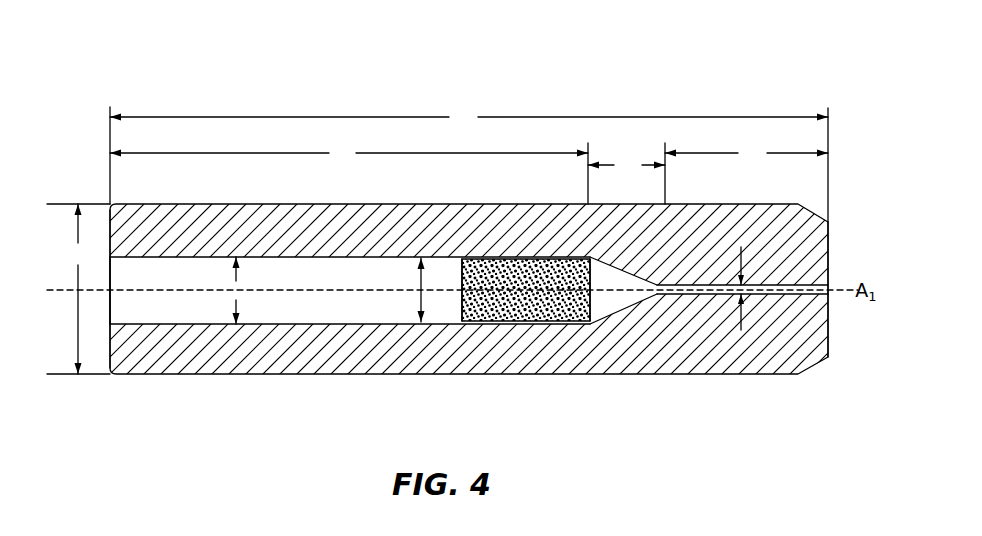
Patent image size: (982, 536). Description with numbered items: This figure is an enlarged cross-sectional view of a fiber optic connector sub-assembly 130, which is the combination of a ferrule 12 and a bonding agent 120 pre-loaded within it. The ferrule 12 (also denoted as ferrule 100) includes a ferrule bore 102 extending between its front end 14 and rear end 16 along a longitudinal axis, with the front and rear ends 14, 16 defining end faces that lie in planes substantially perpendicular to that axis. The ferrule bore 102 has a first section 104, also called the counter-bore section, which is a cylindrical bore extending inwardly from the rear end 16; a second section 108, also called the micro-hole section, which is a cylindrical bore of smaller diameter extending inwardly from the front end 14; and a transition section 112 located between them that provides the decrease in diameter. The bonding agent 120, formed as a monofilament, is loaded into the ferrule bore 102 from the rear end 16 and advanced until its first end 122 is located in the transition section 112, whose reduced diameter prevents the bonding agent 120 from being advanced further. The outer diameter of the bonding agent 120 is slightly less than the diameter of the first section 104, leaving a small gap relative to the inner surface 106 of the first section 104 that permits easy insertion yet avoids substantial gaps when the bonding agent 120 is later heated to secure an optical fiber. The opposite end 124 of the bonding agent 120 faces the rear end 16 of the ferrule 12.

The fiber optic connector sub-assembly 130 is at (200, 86).
The ferrule 12 is at (263, 380).
The front end 14 is at (830, 248).
The rear end 16 is at (108, 236).
The ferrule 100 is at (180, 200).
The ferrule bore 102 is at (100, 310).
The first section 104 is at (183, 325).
The inner surface 106 is at (293, 322).
The second section 108 is at (790, 296).
The transition section 112 is at (648, 296).
The bonding agent 120 is at (527, 330).
The first end 122 is at (592, 300).
The pellet rear face 124 is at (450, 322).